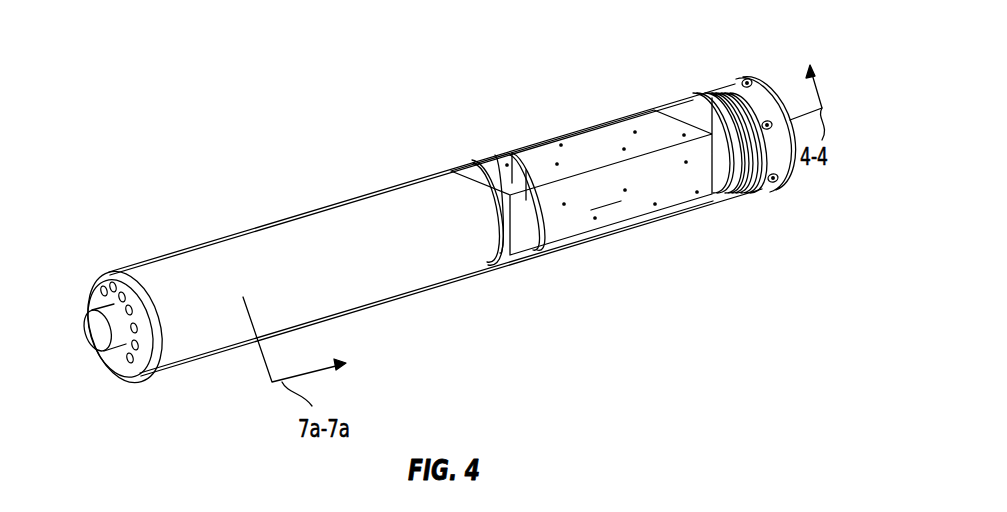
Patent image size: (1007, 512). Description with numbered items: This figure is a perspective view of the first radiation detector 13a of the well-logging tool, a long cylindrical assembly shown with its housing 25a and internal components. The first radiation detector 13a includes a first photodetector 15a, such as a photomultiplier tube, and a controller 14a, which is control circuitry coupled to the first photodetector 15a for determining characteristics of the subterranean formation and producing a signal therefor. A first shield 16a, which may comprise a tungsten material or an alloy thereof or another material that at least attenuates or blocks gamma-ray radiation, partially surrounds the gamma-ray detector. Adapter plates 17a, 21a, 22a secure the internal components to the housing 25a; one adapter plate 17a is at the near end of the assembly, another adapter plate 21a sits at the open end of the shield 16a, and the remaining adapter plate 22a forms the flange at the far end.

The first radiation detector 13a is at (503, 92).
The controller 14a is at (623, 133).
The first photodetector 15a is at (510, 190).
The first shield 16a is at (247, 255).
The adapter plate 17a is at (122, 278).
The adapter plate 21a is at (503, 245).
The adapter plate 22a is at (793, 152).
The housing 25a is at (482, 155).